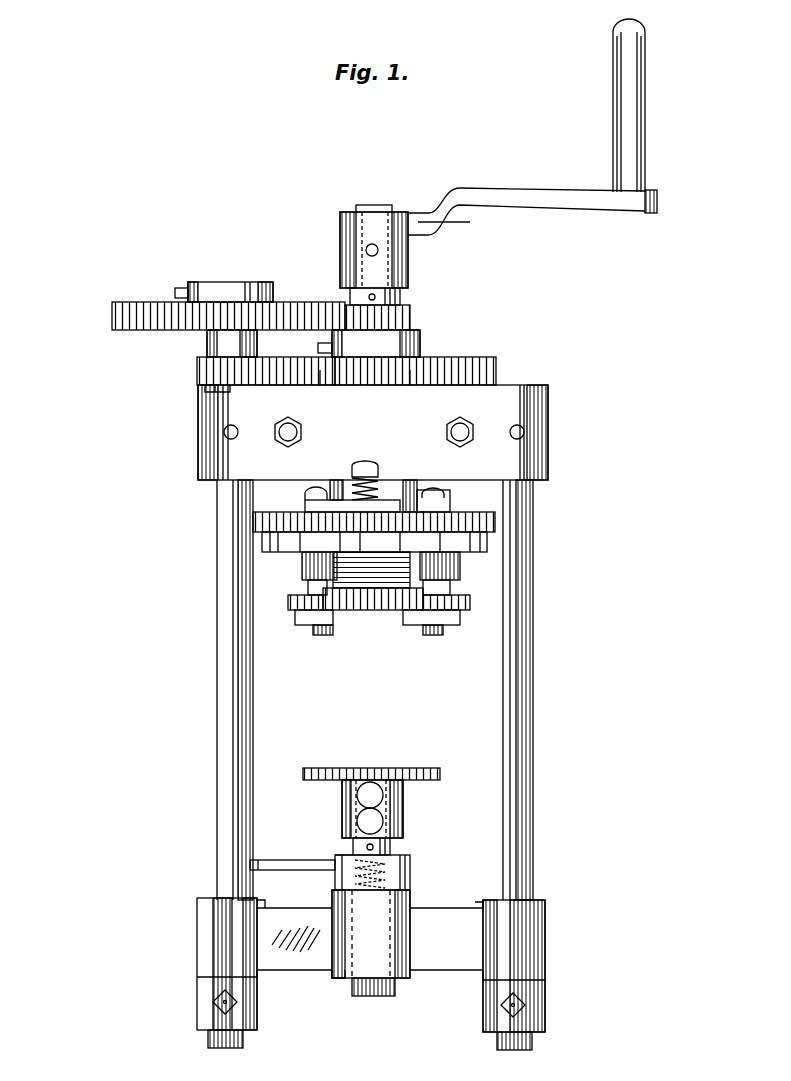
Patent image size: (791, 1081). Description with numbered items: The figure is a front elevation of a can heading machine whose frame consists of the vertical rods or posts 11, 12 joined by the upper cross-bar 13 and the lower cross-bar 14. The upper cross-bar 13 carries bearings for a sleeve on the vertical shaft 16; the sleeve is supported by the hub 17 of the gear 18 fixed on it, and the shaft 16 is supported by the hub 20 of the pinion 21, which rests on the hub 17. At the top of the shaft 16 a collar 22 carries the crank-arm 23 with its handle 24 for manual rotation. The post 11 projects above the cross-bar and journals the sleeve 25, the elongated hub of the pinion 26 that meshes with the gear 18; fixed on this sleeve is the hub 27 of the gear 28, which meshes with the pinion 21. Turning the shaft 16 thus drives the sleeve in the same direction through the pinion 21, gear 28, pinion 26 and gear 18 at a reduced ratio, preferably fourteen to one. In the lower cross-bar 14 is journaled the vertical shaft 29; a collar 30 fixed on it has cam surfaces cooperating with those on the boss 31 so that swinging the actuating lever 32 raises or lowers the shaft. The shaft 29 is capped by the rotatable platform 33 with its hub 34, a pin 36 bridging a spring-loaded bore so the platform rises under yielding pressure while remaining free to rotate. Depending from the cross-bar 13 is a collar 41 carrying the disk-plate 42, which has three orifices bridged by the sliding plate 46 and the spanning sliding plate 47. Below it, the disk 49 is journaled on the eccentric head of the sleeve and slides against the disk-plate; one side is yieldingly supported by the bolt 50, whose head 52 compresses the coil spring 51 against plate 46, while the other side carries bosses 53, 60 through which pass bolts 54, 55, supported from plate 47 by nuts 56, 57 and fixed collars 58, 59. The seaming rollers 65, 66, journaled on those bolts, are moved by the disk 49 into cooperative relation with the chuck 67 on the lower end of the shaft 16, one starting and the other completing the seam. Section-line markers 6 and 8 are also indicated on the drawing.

The vertical rod or post 11 is at (217, 540).
The vertical rod or post 12 is at (533, 548).
The upper cross-bar 13 is at (435, 408).
The lower cross-bar 14 is at (371, 974).
The vertical shaft 16 is at (381, 205).
The hub of the gear 17 is at (418, 340).
The gear 18 is at (440, 366).
The hub of the pinion 20 is at (400, 296).
The pinion 21 is at (410, 316).
The collar 22 is at (340, 231).
The crank-arm 23 is at (526, 188).
The handle 24 is at (640, 102).
The sleeve 25 is at (207, 346).
The pinion 26 is at (197, 370).
The hub of the gear 27 is at (248, 284).
The gear 28 is at (112, 318).
The vertical shaft 29 is at (390, 845).
The collar 30 is at (410, 862).
The boss 31 is at (380, 902).
The actuating lever 32 is at (268, 860).
The rotatable platform 33 is at (420, 768).
The hub 34 is at (403, 805).
The pin 36 is at (360, 846).
The collar 41 is at (448, 494).
The disk-plate 42 is at (262, 514).
The sliding plate 46 is at (410, 490).
The sliding plate 47 is at (330, 490).
The disk 49 is at (262, 548).
The bolt 50 is at (355, 470).
The coil spring 51 is at (372, 475).
The head of the bolt 52 is at (365, 470).
The boss 53 is at (302, 568).
The bolt 54 is at (316, 632).
The bolt 55 is at (435, 635).
The nut 56 is at (315, 493).
The nut 57 is at (444, 498).
The fixed collar 58 is at (308, 588).
The fixed collar 59 is at (450, 588).
The boss 60 is at (460, 567).
The seaming roller 65 is at (295, 614).
The seaming roller 66 is at (460, 616).
The chuck 67 is at (372, 600).
The section line 6- 6 is at (666, 682).
The section line 8- 8 is at (391, 1033).